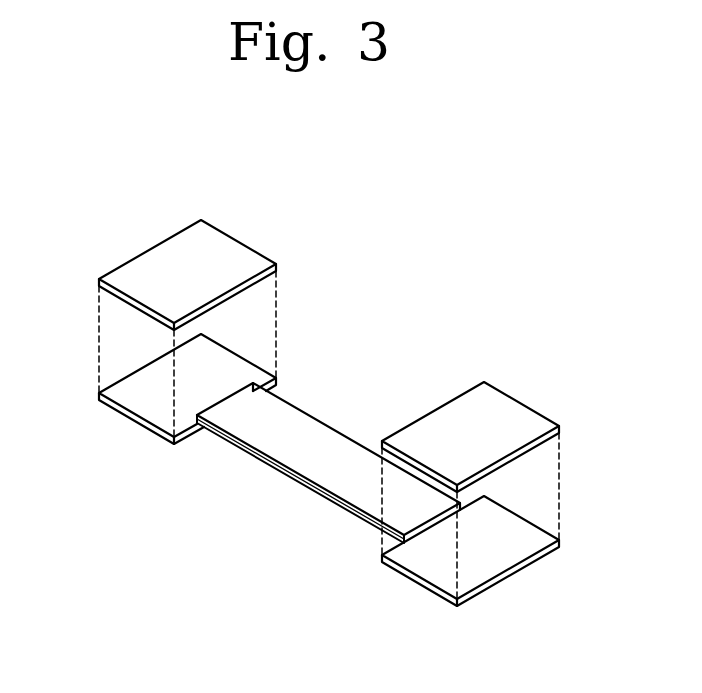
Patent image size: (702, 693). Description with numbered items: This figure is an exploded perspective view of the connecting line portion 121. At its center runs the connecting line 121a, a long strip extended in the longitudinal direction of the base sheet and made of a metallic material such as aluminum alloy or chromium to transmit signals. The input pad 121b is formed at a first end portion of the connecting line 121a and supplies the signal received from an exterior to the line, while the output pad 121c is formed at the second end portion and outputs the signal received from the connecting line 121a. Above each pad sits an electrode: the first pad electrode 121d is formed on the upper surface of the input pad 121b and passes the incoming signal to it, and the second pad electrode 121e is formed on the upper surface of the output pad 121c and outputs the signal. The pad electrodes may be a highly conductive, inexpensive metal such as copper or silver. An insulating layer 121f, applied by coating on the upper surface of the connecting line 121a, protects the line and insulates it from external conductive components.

The connecting line portion 121 is at (534, 171).
The connecting line 121a is at (280, 477).
The input pad 121b is at (494, 561).
The output pad 121c is at (147, 405).
The first pad electrode 121d is at (508, 414).
The second pad electrode 121e is at (232, 262).
The insulating layer 121f is at (320, 437).